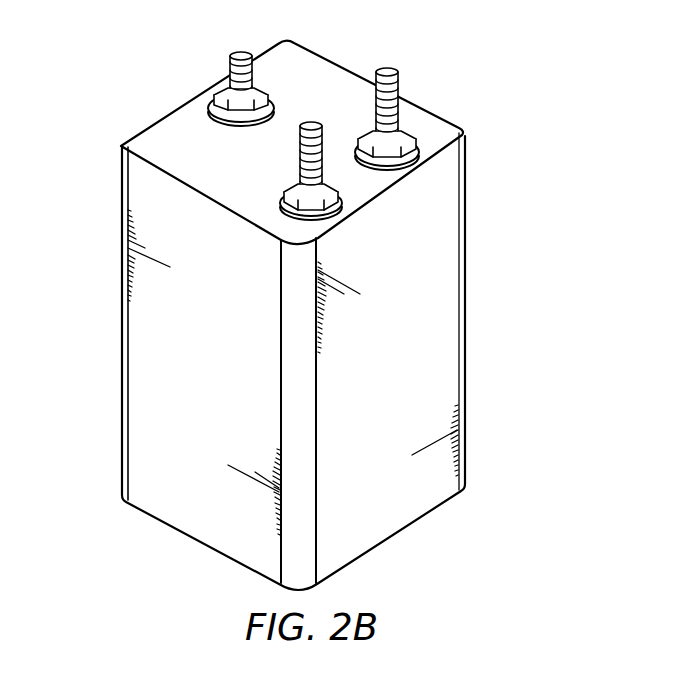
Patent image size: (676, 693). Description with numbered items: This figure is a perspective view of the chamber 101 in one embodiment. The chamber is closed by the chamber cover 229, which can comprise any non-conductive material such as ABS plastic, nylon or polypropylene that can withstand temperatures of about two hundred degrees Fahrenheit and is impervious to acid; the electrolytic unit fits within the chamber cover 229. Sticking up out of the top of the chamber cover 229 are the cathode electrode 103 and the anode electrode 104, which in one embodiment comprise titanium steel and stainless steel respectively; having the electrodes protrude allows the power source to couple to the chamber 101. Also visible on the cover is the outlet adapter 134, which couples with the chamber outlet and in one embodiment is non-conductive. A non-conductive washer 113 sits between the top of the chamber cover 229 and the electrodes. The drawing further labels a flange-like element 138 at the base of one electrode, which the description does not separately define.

The chamber 101 is at (474, 266).
The cathode electrode 103 is at (300, 141).
The anode electrode 104 is at (398, 81).
The non-conductive washer 113 is at (414, 149).
The outlet adapter 134 is at (230, 64).
The flange washer 138 is at (401, 161).
The chamber cover 229 is at (150, 356).